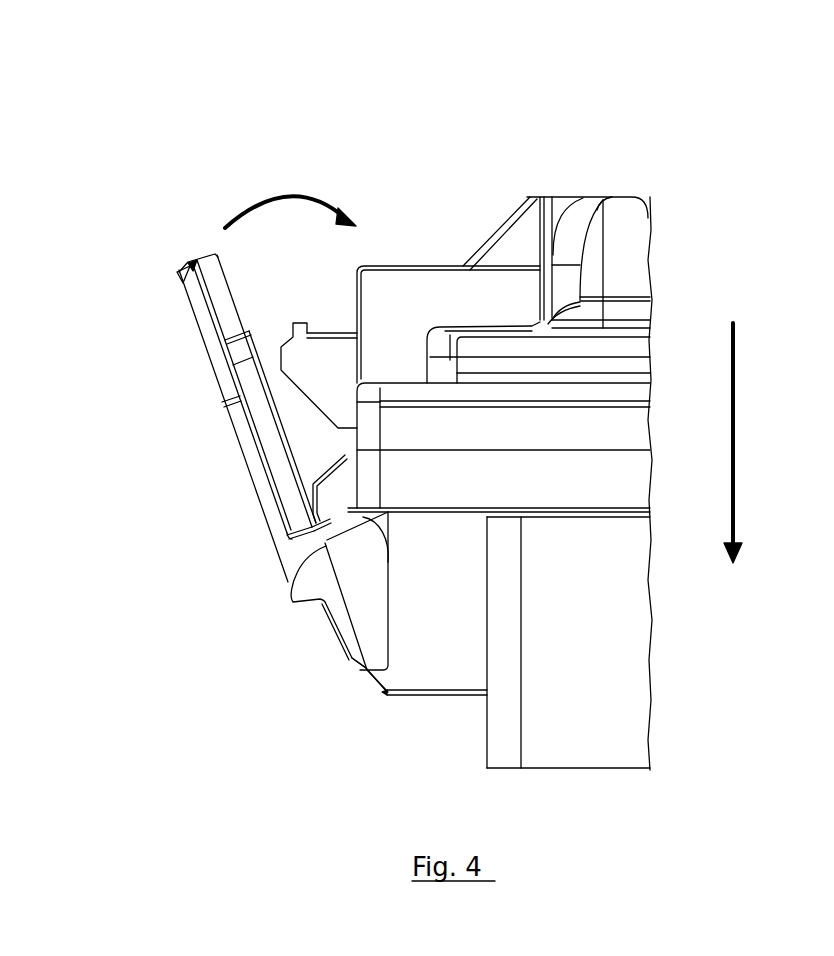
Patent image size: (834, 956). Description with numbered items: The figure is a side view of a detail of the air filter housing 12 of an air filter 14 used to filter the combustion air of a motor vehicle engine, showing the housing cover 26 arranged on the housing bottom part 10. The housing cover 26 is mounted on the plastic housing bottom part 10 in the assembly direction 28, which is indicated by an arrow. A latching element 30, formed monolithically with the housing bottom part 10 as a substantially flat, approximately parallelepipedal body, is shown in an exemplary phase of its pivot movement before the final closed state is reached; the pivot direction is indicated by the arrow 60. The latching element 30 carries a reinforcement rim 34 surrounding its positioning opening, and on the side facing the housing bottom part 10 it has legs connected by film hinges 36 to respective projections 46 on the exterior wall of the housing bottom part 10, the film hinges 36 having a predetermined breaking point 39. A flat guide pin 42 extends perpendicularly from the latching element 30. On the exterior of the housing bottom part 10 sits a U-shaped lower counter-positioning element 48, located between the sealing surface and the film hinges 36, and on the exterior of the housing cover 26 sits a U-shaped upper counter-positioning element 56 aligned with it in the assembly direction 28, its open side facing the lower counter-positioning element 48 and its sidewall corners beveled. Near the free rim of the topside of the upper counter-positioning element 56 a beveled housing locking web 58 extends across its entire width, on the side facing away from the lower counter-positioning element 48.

The housing bottom part 10 is at (500, 743).
The air filter housing 12 is at (444, 704).
The air filter 14 is at (191, 134).
The housing cover 26 is at (528, 242).
The assembly direction 28 is at (733, 380).
The latching element 30 is at (247, 502).
The reinforcement rim 34 is at (262, 423).
The film hinge 36 is at (353, 660).
The predetermined breaking point 39 is at (362, 670).
The guide pin 42 is at (389, 556).
The projection 46 is at (420, 657).
The lower counter-positioning element 48 is at (288, 582).
The upper counter-positioning element 56 is at (343, 343).
The housing locking web 58 is at (293, 330).
The pivot direction arrow 60 is at (295, 198).